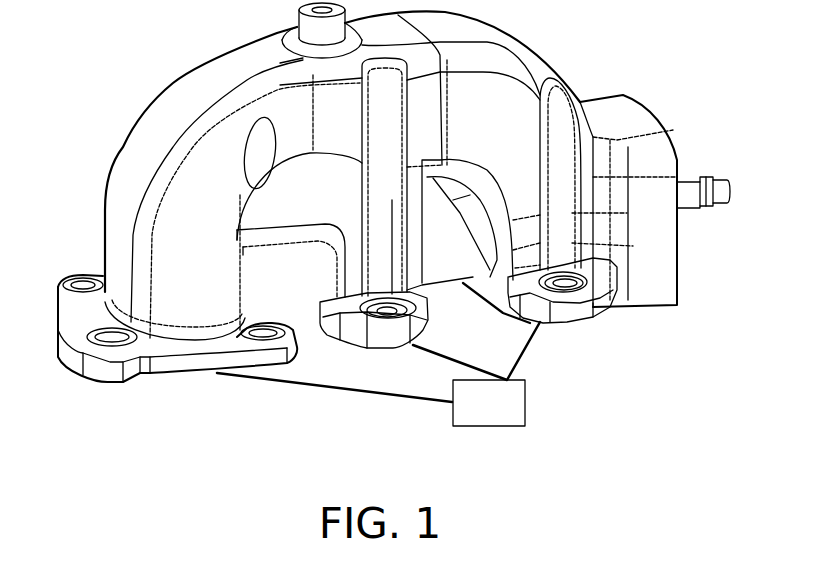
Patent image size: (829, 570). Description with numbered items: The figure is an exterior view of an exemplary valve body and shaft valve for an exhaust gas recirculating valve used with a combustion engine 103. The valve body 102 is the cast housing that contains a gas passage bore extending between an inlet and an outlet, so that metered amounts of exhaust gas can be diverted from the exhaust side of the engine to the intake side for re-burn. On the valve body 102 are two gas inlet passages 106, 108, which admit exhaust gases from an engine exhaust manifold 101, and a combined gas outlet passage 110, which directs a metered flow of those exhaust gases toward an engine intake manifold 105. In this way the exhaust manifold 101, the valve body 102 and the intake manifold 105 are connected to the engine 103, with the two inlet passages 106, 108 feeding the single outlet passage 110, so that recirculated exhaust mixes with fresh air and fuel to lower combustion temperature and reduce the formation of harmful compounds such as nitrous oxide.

The exhaust manifold 101 is at (503, 380).
The valve body 102 is at (187, 117).
The combustion engine 103 is at (489, 403).
The intake manifold 105 is at (450, 402).
The gas inlet passage 106 is at (393, 343).
The gas inlet passage 108 is at (570, 318).
The combined gas outlet passage 110 is at (185, 372).